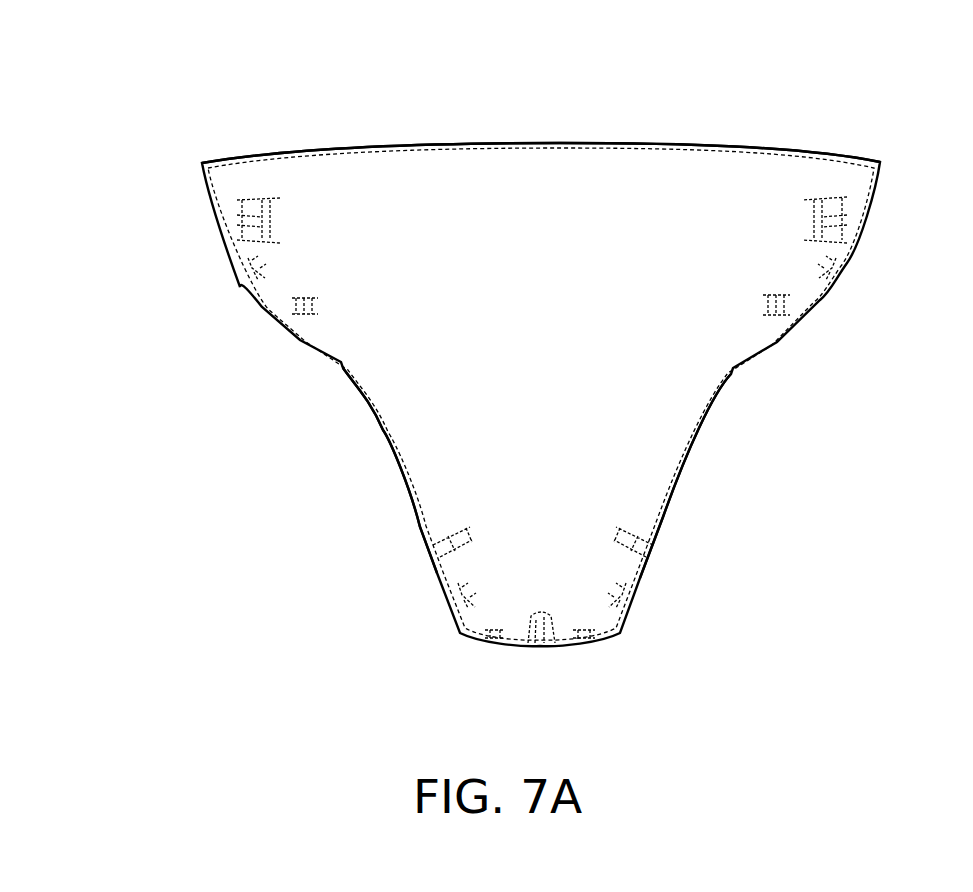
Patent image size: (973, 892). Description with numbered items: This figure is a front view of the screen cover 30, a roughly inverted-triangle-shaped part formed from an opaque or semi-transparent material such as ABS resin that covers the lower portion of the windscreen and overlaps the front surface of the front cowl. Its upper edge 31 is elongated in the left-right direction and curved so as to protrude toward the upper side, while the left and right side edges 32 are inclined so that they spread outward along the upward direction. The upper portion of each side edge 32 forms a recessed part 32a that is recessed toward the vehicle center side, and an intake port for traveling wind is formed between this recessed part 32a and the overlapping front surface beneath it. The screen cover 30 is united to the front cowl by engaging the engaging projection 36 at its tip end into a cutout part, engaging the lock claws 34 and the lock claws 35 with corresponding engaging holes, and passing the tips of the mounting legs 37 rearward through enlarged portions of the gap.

The screen cover 30 is at (643, 142).
The upper edge 31 is at (430, 143).
The side edge 32 is at (438, 574).
The recessed part 32a is at (337, 364).
The lock claw 34 is at (300, 306).
The lock claw 35 is at (450, 609).
The engaging projection 36 is at (542, 653).
The mounting leg 37 is at (243, 221).